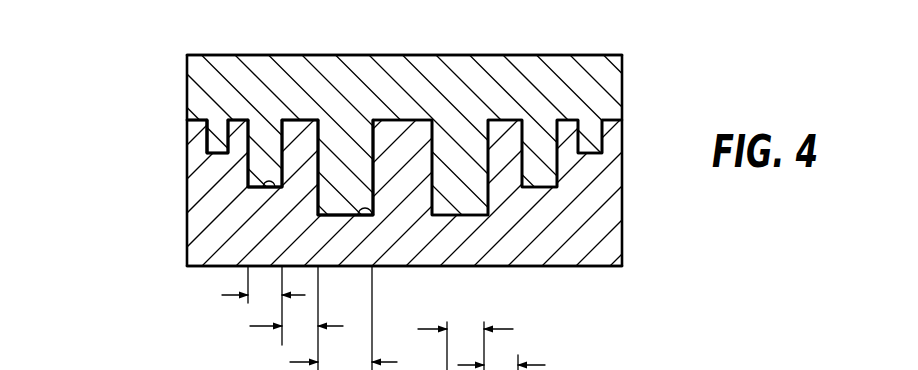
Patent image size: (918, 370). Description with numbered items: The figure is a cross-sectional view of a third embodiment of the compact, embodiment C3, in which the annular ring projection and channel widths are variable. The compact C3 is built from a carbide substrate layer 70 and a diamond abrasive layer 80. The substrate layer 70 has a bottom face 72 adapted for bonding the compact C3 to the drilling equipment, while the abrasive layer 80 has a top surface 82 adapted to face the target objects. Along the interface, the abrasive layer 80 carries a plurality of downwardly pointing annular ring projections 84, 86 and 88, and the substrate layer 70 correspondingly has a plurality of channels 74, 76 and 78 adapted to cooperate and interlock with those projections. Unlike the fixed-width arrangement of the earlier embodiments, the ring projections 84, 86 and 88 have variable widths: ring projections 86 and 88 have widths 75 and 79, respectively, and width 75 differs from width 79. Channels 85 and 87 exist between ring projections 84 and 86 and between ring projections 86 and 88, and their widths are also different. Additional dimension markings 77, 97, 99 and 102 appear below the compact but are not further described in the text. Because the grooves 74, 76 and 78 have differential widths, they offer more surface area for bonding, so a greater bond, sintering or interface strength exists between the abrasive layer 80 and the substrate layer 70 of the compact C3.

The substrate layer 70 is at (200, 222).
The bottom face 72 is at (550, 268).
The channel 74 is at (208, 148).
The channel 76 is at (270, 188).
The channel 78 is at (368, 205).
The abrasive layer 80 is at (197, 66).
The top surface 82 is at (445, 55).
The annular ring projection 84 is at (216, 150).
The channel 85 is at (235, 118).
The annular ring projection 86 is at (263, 180).
The channel 87 is at (282, 183).
The annular ring projection 88 is at (348, 207).
The width 75 is at (263, 296).
The width dimension 77 is at (298, 327).
The width 79 is at (343, 318).
The width dimension 97 is at (465, 326).
The width dimension 99 is at (500, 362).
The width dimension 102 is at (642, 362).
The compact embodiment C3 is at (107, 162).